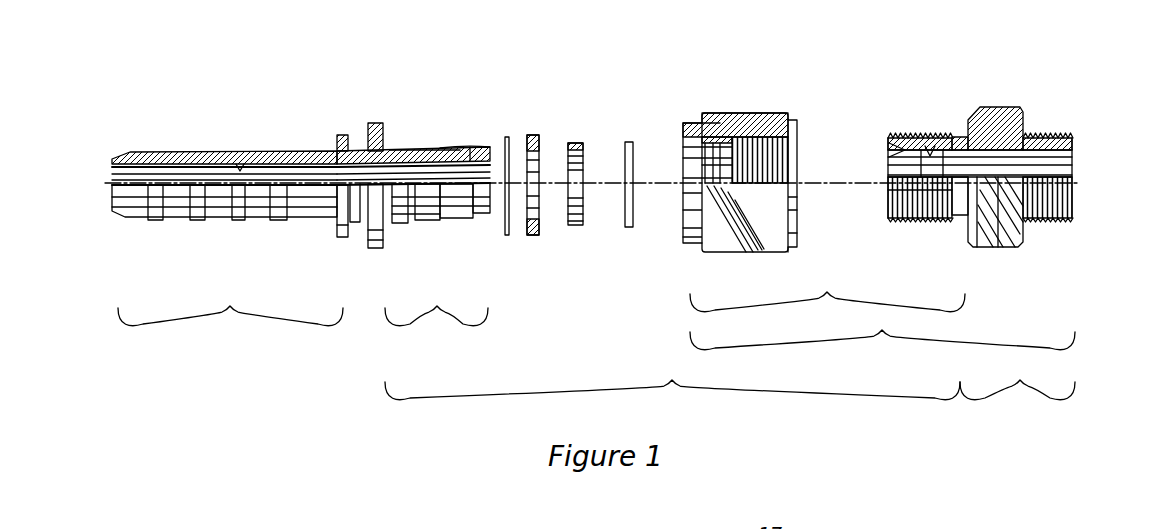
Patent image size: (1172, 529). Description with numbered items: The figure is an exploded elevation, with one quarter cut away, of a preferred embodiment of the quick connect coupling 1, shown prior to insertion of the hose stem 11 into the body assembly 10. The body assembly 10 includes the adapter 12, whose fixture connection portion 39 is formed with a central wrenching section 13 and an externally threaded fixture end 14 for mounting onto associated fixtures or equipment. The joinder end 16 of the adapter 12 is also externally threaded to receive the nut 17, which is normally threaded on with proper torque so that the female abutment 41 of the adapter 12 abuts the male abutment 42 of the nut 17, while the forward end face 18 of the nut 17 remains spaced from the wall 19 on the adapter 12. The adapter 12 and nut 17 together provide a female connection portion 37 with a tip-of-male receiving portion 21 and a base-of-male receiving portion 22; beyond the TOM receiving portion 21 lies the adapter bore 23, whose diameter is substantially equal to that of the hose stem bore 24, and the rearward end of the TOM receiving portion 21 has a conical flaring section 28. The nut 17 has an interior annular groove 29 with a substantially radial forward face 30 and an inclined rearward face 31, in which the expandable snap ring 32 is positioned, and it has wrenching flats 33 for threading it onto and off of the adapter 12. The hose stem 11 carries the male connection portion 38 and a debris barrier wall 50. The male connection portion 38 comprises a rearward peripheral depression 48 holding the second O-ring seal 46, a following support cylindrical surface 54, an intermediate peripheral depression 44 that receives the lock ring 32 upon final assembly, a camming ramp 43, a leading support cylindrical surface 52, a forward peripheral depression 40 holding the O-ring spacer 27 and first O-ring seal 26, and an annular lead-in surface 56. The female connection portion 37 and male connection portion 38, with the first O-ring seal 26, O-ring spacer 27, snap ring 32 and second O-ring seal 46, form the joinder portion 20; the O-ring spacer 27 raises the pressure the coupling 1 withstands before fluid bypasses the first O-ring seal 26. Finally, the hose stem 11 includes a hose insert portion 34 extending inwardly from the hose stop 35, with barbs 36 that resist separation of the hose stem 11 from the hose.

The quick connect coupling 1 is at (937, 34).
The body assembly 10 is at (884, 191).
The hose stem 11 is at (224, 214).
The adapter 12 is at (957, 150).
The central wrenching section 13 is at (1000, 247).
The fixture end 14 is at (1046, 136).
The joinder end 16 is at (920, 222).
The nut 17 is at (724, 185).
The forward end face 18 is at (799, 125).
The wall 19 is at (962, 220).
The joinder portion 20 is at (648, 230).
The tip-of-male receiving portion 21 is at (929, 148).
The base-of-male receiving portion 22 is at (685, 146).
The adapter bore 23 is at (975, 110).
The hose stem bore 24 is at (241, 168).
The first O-ring seal 26 is at (629, 142).
The O-ring spacer 27 is at (576, 143).
The conical flaring section 28 is at (889, 153).
The interior annular groove 29 is at (705, 115).
The forward face 30 is at (752, 113).
The rearward face 31 is at (698, 150).
The snap ring 32 is at (533, 136).
The wrenching flats 33 is at (738, 253).
The hose insert portion 34 is at (230, 214).
The hose stop 35 is at (340, 135).
The barbs 36 is at (200, 153).
The female connection portion 37 is at (827, 311).
The male connection portion 38 is at (432, 207).
The fixture connection portion 39 is at (1017, 397).
The forward peripheral depression 40 is at (470, 150).
The female abutment 41 is at (889, 200).
The male abutment 42 is at (748, 152).
The camming ramp 43 is at (443, 220).
The intermediate peripheral depression 44 is at (419, 222).
The second O-ring seal 46 is at (507, 137).
The rearward peripheral depression 48 is at (386, 149).
The debris barrier wall 50 is at (378, 249).
The leading support cylindrical surface 52 is at (453, 148).
The following support cylindrical surface 54 is at (400, 150).
The annular lead-in surface 56 is at (491, 222).